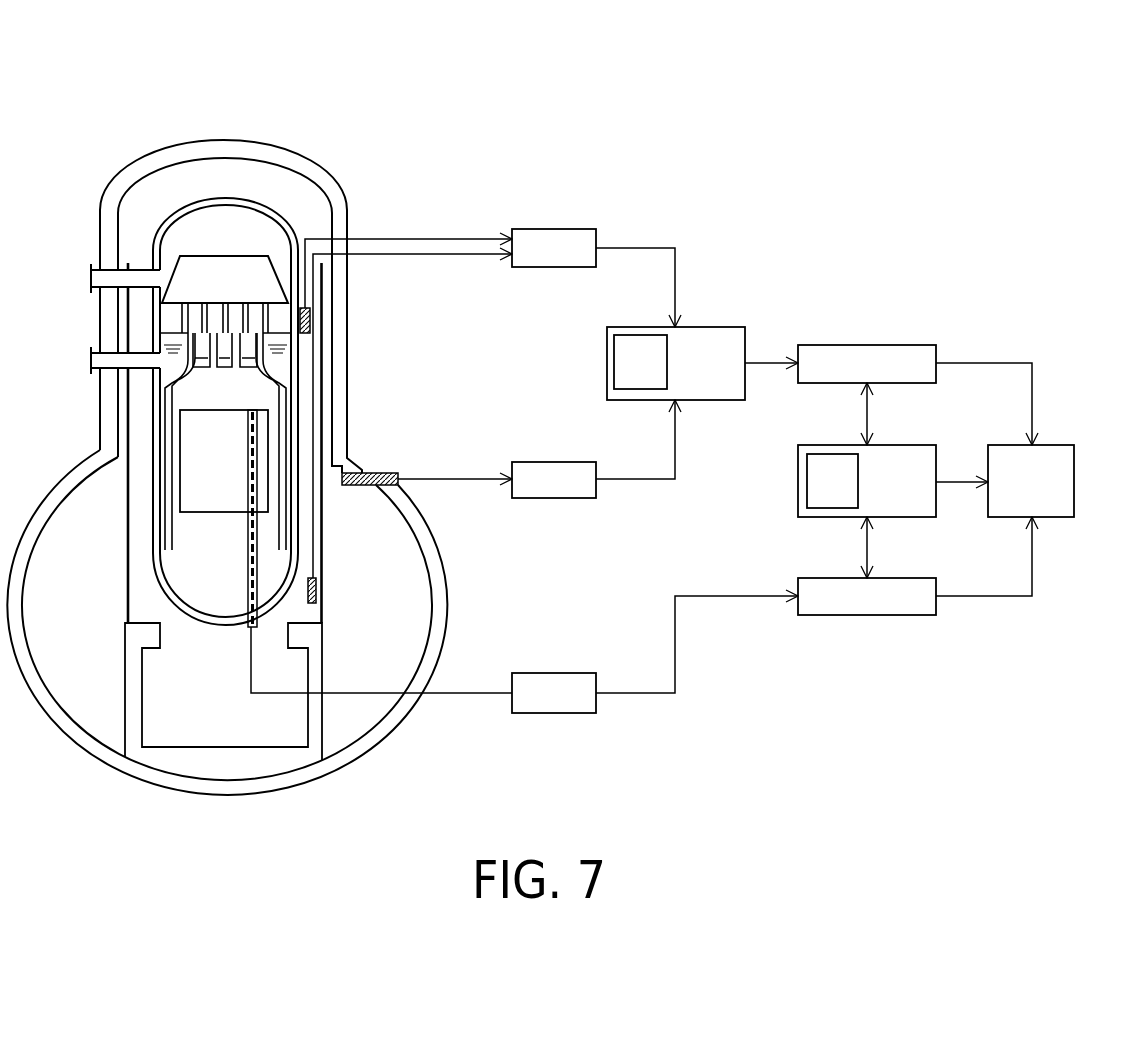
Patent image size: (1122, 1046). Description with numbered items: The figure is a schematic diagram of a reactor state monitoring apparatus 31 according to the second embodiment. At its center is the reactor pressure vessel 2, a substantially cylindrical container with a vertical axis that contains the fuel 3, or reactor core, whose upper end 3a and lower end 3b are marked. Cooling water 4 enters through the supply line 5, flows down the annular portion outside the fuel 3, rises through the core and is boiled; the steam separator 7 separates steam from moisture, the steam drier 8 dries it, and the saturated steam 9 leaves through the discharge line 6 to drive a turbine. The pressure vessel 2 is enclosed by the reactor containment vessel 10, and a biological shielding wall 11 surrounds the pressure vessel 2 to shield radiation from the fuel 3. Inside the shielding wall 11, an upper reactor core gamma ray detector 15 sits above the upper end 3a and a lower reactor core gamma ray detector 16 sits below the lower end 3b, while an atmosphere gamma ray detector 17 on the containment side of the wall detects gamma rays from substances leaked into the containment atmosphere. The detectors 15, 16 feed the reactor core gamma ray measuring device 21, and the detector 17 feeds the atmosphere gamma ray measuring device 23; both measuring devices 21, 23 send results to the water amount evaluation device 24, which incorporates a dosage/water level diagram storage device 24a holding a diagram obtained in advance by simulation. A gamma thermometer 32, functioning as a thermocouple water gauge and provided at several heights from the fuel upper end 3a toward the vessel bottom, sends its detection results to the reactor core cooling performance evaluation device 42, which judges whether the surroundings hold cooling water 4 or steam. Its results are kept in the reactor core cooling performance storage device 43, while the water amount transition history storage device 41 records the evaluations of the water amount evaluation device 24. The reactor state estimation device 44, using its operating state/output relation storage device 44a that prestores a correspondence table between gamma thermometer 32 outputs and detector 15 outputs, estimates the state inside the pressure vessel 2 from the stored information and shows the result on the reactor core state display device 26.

The reactor pressure vessel 2 is at (228, 198).
The fuel 3 is at (218, 488).
The upper end of the fuel 3a is at (220, 410).
The lower end of the fuel 3b is at (195, 515).
The cooling water 4 is at (208, 582).
The supply line 5 is at (100, 362).
The discharge line 6 is at (100, 281).
The steam separator 7 is at (262, 333).
The steam drier 8 is at (278, 279).
The saturated steam 9 is at (241, 234).
The reactor containment vessel 10 is at (100, 233).
The biological shielding wall 11 is at (324, 393).
The upper reactor core gamma ray detector 15 is at (311, 318).
The lower reactor core gamma ray detector 16 is at (317, 592).
The atmosphere gamma ray detector 17 is at (383, 473).
The reactor core gamma ray measuring device 21 is at (577, 229).
The atmosphere gamma ray measuring device 23 is at (577, 462).
The water amount evaluation device 24 is at (702, 347).
The dosage/water level diagram storage device 24a is at (669, 363).
The reactor core state display device 26 is at (1055, 445).
The reactor state monitoring apparatus 31 is at (645, 784).
The gamma thermometer 32 is at (257, 488).
The water amount transition history storage device 41 is at (915, 345).
The reactor core cooling performance evaluation device 42 is at (577, 673).
The reactor core cooling performance storage device 43 is at (915, 578).
The reactor state estimation device 44 is at (893, 495).
The operating state/output relation storage device 44a is at (859, 482).